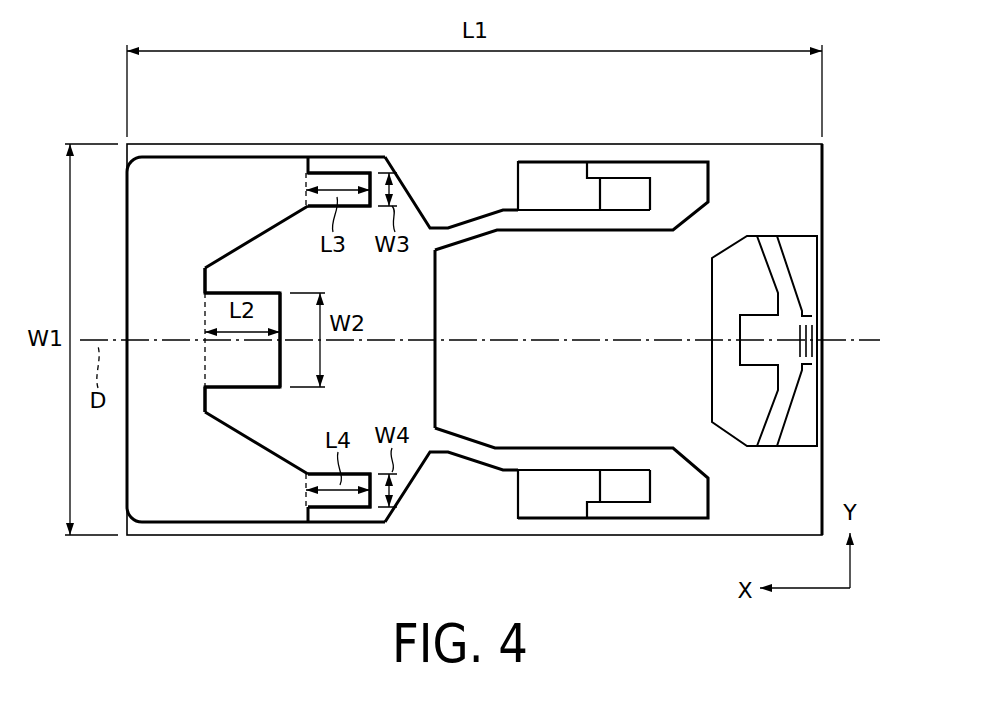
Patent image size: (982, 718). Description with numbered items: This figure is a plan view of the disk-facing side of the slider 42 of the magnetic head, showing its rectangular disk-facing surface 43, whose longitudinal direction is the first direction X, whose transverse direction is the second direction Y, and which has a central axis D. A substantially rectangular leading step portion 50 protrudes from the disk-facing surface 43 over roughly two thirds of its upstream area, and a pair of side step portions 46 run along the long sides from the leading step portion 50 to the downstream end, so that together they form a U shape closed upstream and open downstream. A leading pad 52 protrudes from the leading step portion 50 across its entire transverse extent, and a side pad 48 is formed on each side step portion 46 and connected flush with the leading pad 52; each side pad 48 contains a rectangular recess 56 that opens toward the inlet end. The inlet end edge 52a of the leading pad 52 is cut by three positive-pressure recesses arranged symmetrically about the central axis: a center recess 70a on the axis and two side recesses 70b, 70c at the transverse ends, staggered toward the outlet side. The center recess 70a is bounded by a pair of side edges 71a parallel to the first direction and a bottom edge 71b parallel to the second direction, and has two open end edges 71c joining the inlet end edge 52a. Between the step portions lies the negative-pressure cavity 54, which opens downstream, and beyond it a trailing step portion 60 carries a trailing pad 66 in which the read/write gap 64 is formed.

The slider 42 is at (726, 127).
The disk-facing surface 43 is at (808, 470).
The side step portions 46 is at (540, 165).
The side pad 48 is at (688, 165).
The leading step portion 50 is at (201, 153).
The leading pad 52 is at (432, 372).
The inlet end edge 52a is at (242, 432).
The negative-pressure cavity 54 is at (480, 258).
The recess 56 is at (620, 188).
The trailing step portion 60 is at (808, 256).
The read/write gap 64 is at (818, 323).
The trailing pad 66 is at (790, 378).
The center recess 70a is at (207, 352).
The side recess 70b is at (343, 182).
The side recess 70c is at (343, 510).
The side edges 71a is at (250, 290).
The bottom edge 71b is at (283, 372).
The open end edges 71c is at (205, 284).